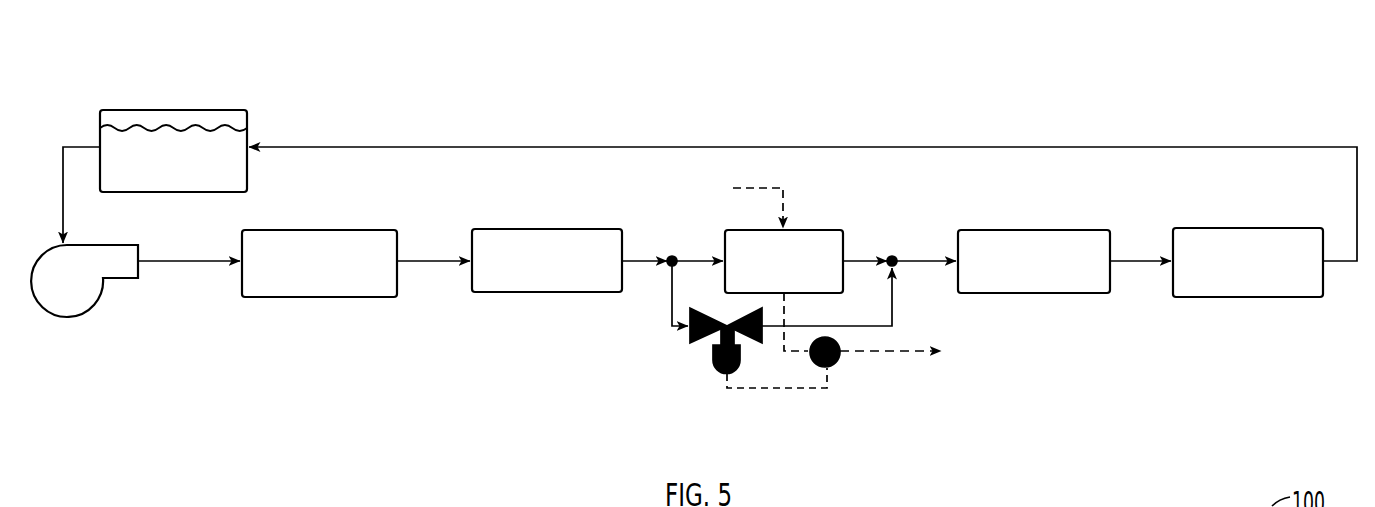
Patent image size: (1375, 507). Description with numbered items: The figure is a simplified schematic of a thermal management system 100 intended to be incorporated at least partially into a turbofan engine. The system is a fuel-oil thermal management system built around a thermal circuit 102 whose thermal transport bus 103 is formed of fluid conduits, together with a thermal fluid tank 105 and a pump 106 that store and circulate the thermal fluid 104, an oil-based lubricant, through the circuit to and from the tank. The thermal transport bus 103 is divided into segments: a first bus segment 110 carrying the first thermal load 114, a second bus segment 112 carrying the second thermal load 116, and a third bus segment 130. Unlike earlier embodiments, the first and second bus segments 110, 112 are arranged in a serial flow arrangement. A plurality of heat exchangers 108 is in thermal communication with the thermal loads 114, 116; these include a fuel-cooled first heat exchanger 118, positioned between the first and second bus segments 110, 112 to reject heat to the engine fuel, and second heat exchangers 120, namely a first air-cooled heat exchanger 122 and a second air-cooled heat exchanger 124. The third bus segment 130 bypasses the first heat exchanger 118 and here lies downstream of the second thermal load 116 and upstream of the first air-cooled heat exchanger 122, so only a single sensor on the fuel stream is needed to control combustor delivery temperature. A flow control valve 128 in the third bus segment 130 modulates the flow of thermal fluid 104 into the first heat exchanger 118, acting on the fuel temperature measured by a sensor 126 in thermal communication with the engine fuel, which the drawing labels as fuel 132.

The thermal management system 100 is at (698, 236).
The thermal circuit 102 is at (803, 165).
The thermal transport bus 103 is at (1075, 147).
The thermal fluid 104 is at (147, 123).
The thermal fluid tank 105 is at (95, 115).
The pump 106 is at (87, 297).
The heat exchangers 108 is at (676, 263).
The first bus segment 110 is at (923, 255).
The second bus segment 112 is at (204, 270).
The first thermal load 114 is at (1265, 277).
The second thermal load 116 is at (563, 274).
The first heat exchanger 118 is at (807, 276).
The second heat exchangers 120 is at (676, 263).
The first air-cooled heat exchanger 122 is at (1097, 278).
The second air-cooled heat exchanger 124 is at (378, 279).
The sensor 126 is at (840, 370).
The flow control valve 128 is at (706, 360).
The third bus segment 130 is at (724, 346).
The fuel 132 is at (718, 195).